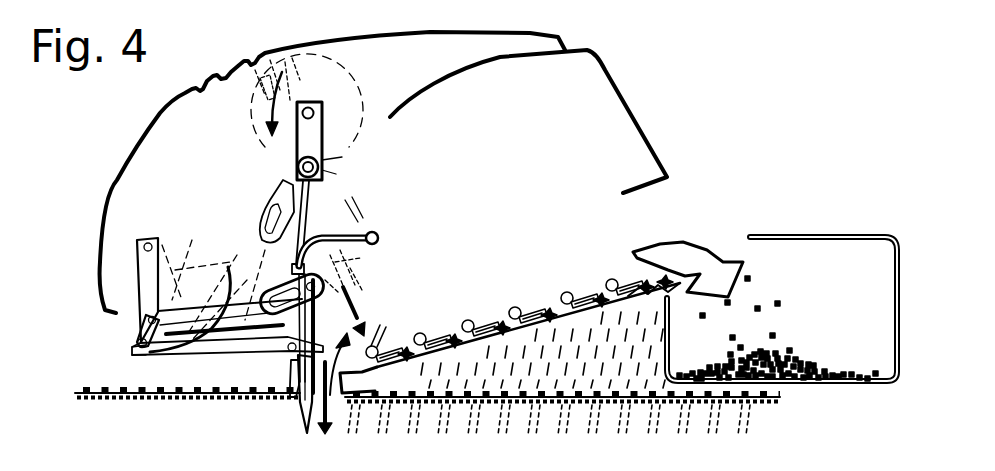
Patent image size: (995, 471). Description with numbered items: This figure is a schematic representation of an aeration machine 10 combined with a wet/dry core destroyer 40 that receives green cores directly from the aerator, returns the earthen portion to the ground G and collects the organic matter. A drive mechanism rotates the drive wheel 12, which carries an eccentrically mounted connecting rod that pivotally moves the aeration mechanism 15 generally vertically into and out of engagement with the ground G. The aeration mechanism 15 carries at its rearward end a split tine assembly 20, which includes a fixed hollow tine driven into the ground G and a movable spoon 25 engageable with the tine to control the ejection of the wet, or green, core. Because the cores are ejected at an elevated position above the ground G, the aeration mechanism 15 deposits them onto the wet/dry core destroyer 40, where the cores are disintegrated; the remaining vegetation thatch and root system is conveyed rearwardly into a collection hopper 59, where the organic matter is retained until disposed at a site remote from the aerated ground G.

The aeration machine 10 is at (135, 110).
The drive wheel 12 is at (345, 152).
The aeration mechanism 15 is at (122, 323).
The split tine assembly 20 is at (383, 271).
The movable spoon 25 is at (376, 264).
The wet/dry core destroyer 40 is at (562, 255).
The collection hopper 59 is at (806, 237).
The ground G is at (105, 392).